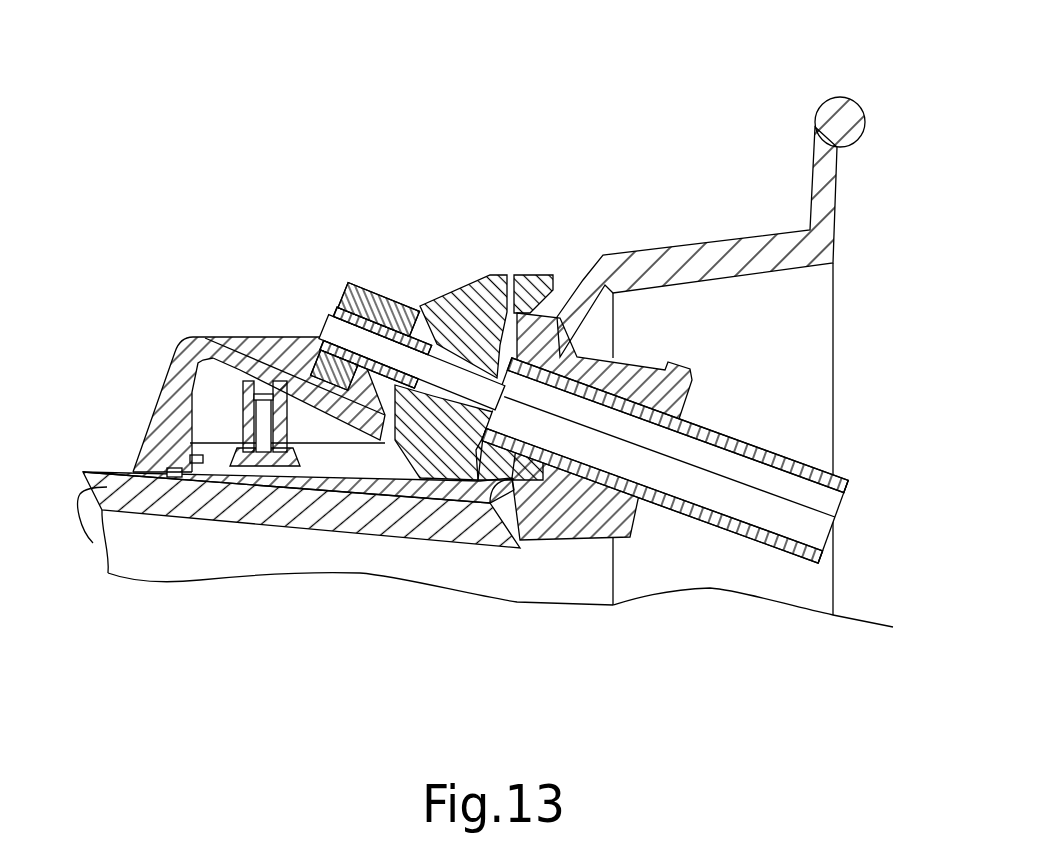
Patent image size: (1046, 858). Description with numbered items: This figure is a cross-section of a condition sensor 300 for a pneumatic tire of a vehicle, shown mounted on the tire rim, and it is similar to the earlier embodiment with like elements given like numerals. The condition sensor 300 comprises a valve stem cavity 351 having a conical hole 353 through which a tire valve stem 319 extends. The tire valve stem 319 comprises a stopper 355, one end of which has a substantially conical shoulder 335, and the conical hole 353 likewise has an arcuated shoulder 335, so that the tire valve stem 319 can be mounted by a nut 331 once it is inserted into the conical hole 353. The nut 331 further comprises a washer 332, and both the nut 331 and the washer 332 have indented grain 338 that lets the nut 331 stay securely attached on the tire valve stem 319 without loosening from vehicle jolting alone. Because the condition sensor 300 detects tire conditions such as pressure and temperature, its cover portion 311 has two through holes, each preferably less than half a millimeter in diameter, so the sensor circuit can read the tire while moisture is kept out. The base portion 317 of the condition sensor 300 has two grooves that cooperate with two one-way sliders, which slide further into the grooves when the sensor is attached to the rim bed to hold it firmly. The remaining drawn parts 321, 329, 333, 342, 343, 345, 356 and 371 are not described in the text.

The condition sensor 300 is at (203, 133).
The cover portion 311 is at (207, 470).
The base portion 317 is at (190, 443).
The tire valve stem 319 is at (805, 473).
The housing body 321 is at (692, 400).
The cap 329 is at (248, 347).
The nut 331 is at (350, 295).
The washer 332 is at (415, 330).
The post 333 is at (242, 458).
The conical shoulder 335 is at (403, 462).
The indented grain 338 is at (412, 325).
The base section 342 is at (93, 545).
The ball end 343 is at (815, 128).
The lip plate 345 is at (363, 462).
The valve stem cavity 351 is at (276, 342).
The conical hole 353 is at (530, 327).
The stopper 355 is at (455, 462).
The spacer 356 is at (503, 273).
The pin 371 is at (315, 470).